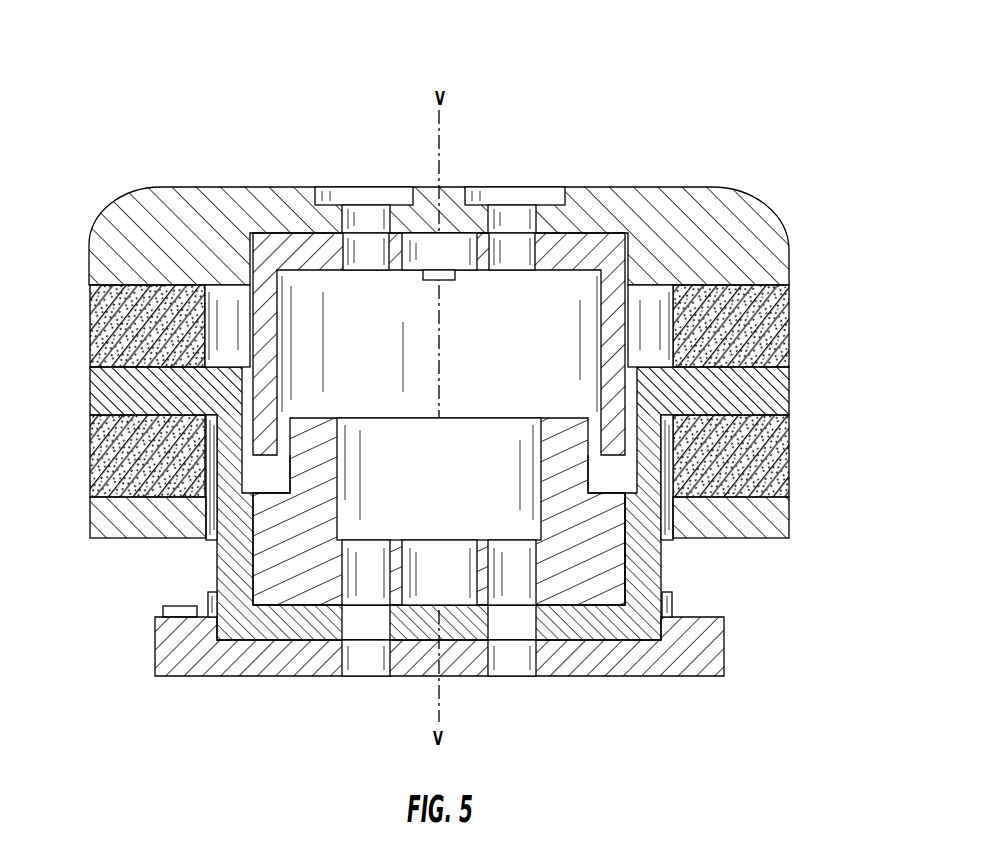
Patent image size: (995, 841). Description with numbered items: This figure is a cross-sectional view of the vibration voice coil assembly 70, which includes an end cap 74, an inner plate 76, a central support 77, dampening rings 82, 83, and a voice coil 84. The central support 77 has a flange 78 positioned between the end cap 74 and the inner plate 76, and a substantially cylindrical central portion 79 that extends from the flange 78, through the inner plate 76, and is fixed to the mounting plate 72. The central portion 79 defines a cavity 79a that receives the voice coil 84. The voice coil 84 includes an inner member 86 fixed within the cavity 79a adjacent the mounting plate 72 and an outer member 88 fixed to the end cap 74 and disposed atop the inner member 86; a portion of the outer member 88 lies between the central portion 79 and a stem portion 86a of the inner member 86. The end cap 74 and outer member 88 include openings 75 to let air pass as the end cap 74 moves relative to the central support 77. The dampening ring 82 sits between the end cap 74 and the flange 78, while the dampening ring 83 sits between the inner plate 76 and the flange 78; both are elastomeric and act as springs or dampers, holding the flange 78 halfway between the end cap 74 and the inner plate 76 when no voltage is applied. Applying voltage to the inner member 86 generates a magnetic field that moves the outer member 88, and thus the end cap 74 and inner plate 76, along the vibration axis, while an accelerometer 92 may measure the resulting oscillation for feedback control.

The vibration voice coil assembly 70 is at (551, 63).
The mounting plate 72 is at (170, 658).
The end cap 74 is at (138, 212).
The openings 75 is at (483, 187).
The inner plate 76 is at (94, 518).
The central support 77 is at (796, 388).
The flange 78 is at (96, 384).
The central portion 79 is at (647, 575).
The cavity 79a is at (612, 472).
The dampening ring 82 is at (776, 462).
The dampening ring 83 is at (784, 312).
The voice coil 84 is at (632, 524).
The inner member 86 is at (580, 572).
The stem portion 86a is at (297, 472).
The outer member 88 is at (602, 318).
The accelerometer 92 is at (450, 282).